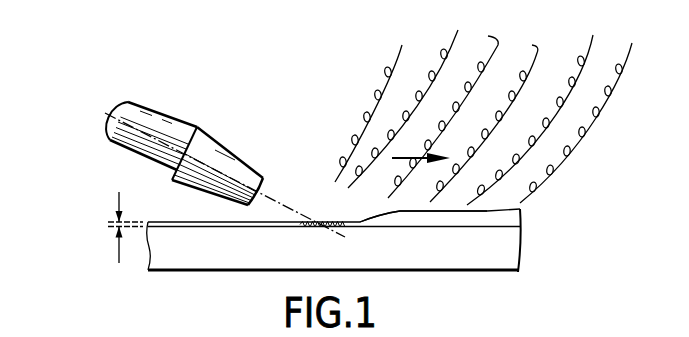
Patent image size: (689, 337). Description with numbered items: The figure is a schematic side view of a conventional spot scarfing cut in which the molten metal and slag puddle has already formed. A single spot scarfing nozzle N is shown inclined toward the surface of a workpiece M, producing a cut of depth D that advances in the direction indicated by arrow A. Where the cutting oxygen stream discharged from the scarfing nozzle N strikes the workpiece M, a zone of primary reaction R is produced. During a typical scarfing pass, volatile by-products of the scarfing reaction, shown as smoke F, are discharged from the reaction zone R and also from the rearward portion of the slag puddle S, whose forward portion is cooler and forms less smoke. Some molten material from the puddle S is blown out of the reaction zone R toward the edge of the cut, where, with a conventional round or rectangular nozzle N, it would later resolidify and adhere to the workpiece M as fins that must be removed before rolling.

The spot scarfing nozzle N is at (217, 140).
The smoke F is at (402, 70).
The arrow A is at (412, 153).
The zone of primary reaction R is at (323, 222).
The slag puddle S is at (383, 213).
The workpiece M is at (505, 248).
The depth D is at (125, 242).